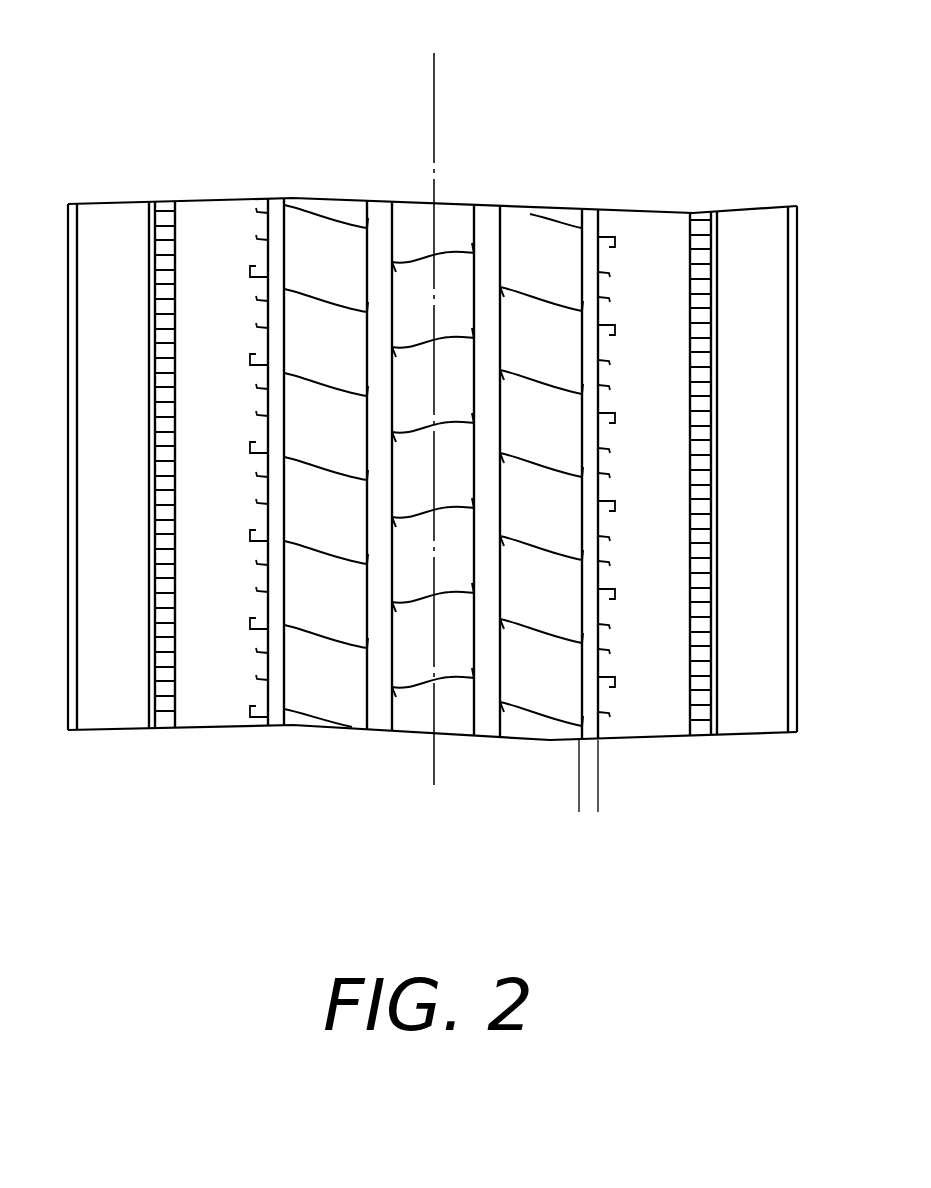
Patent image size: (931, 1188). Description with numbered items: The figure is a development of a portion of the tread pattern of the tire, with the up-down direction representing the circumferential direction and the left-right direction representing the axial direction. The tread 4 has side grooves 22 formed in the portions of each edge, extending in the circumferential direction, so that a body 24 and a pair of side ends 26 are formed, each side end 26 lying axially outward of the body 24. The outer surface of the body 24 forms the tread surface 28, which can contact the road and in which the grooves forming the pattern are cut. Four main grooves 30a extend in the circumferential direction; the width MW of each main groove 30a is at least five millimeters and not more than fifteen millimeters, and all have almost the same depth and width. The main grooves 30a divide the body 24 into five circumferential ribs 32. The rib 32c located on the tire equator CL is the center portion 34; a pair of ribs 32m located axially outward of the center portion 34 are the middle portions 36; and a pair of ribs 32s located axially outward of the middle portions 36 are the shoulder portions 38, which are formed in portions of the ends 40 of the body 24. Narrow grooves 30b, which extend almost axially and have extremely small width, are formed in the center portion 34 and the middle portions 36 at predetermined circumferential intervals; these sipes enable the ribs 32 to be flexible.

The tread 4 is at (362, 176).
The side grooves 22 is at (152, 203).
The body 24 is at (410, 196).
The side ends 26 is at (137, 730).
The tread surface 28 is at (634, 210).
The main grooves 30a is at (276, 203).
The narrow grooves 30b is at (318, 203).
The ribs 32 is at (438, 545).
The rib 32s is at (438, 546).
The rib 32m is at (433, 545).
The rib 32c is at (422, 547).
The center portion 34 is at (421, 730).
The middle portions 36 is at (305, 727).
The shoulder portions 38 is at (215, 727).
The ends 40 is at (155, 203).
The tire equator CL is at (437, 80).
The width of main groove MW is at (655, 801).